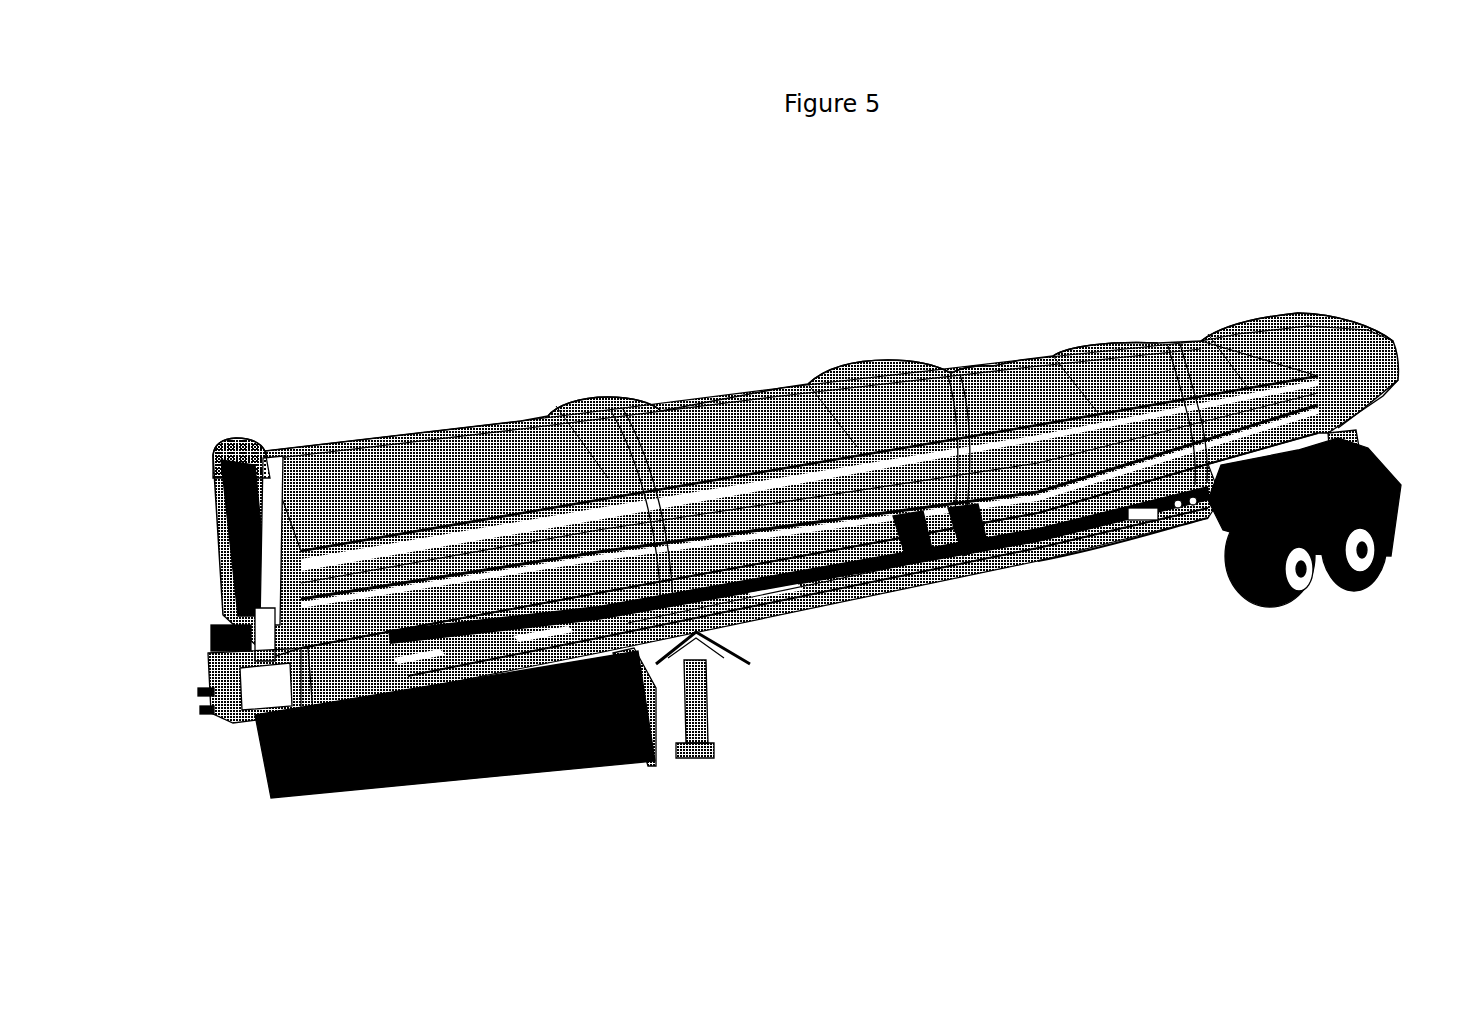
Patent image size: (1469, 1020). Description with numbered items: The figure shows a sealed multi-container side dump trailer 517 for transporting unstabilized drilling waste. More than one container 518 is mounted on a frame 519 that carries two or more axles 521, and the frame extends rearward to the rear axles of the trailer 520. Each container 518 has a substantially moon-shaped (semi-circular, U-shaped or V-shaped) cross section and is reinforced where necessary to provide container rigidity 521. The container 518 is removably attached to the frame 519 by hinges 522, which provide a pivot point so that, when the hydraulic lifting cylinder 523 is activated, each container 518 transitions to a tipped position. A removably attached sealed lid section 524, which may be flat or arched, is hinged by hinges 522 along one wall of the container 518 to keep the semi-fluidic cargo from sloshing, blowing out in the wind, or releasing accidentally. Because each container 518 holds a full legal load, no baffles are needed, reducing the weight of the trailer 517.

The sealed multi-container side dump trailer 517 is at (1315, 146).
The container 518 is at (1037, 500).
The frame 519 is at (1118, 520).
The rear axles of the trailer 520 is at (1370, 612).
The axles / container rigidity reinforcement 521 is at (397, 587).
The hinges 522 is at (210, 672).
The hydraulic lifting cylinder 523 is at (233, 552).
The sealed lid section 524 is at (398, 462).